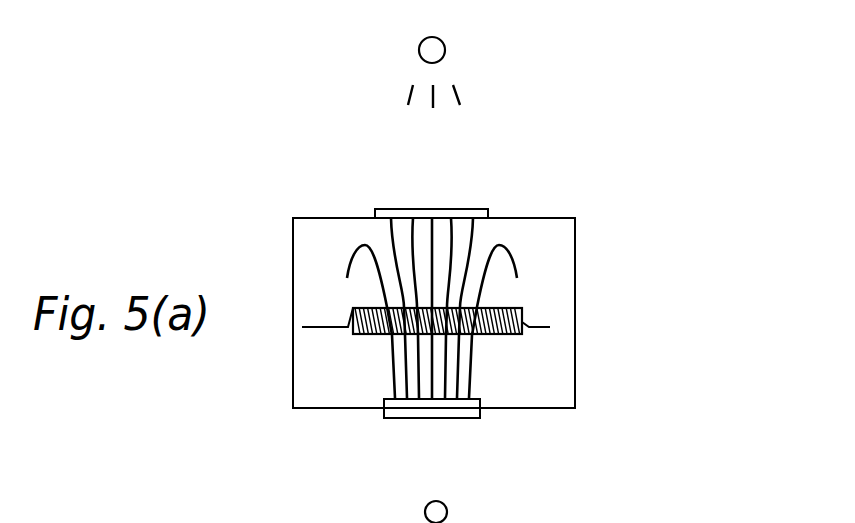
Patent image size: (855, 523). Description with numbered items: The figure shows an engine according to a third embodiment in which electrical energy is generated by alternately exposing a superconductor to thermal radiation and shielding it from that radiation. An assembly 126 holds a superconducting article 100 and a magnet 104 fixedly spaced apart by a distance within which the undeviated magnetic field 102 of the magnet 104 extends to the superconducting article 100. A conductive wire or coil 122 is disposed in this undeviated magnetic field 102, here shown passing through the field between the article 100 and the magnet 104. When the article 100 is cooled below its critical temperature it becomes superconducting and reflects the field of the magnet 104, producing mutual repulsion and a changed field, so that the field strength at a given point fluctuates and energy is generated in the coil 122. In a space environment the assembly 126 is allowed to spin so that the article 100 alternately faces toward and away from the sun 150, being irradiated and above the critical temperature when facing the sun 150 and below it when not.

The superconducting article 100 is at (393, 215).
The magnetic field 102 is at (408, 355).
The magnet 104 is at (398, 407).
The conductive wire or coil 122 is at (350, 310).
The assembly 126 is at (593, 327).
The sun 150 is at (435, 50).